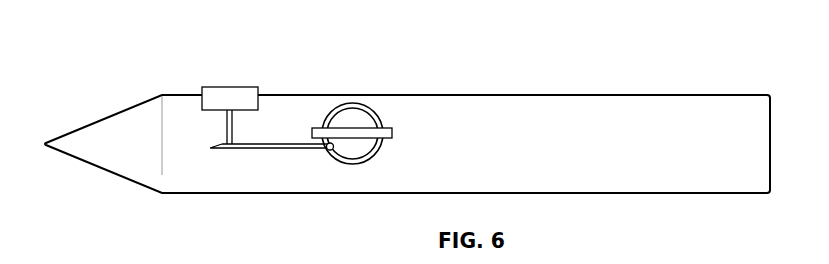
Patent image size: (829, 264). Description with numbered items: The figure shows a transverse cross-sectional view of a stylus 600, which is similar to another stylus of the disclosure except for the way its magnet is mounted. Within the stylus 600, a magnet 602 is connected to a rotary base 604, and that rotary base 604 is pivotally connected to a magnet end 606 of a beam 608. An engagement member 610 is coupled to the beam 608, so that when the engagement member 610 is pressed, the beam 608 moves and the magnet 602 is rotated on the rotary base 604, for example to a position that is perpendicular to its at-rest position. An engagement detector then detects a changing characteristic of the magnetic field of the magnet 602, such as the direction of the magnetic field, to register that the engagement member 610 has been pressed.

The stylus 600 is at (156, 73).
The magnet 602 is at (353, 133).
The rotary base 604 is at (373, 109).
The magnet end 606 is at (330, 151).
The beam 608 is at (279, 147).
The engagement member 610 is at (232, 87).